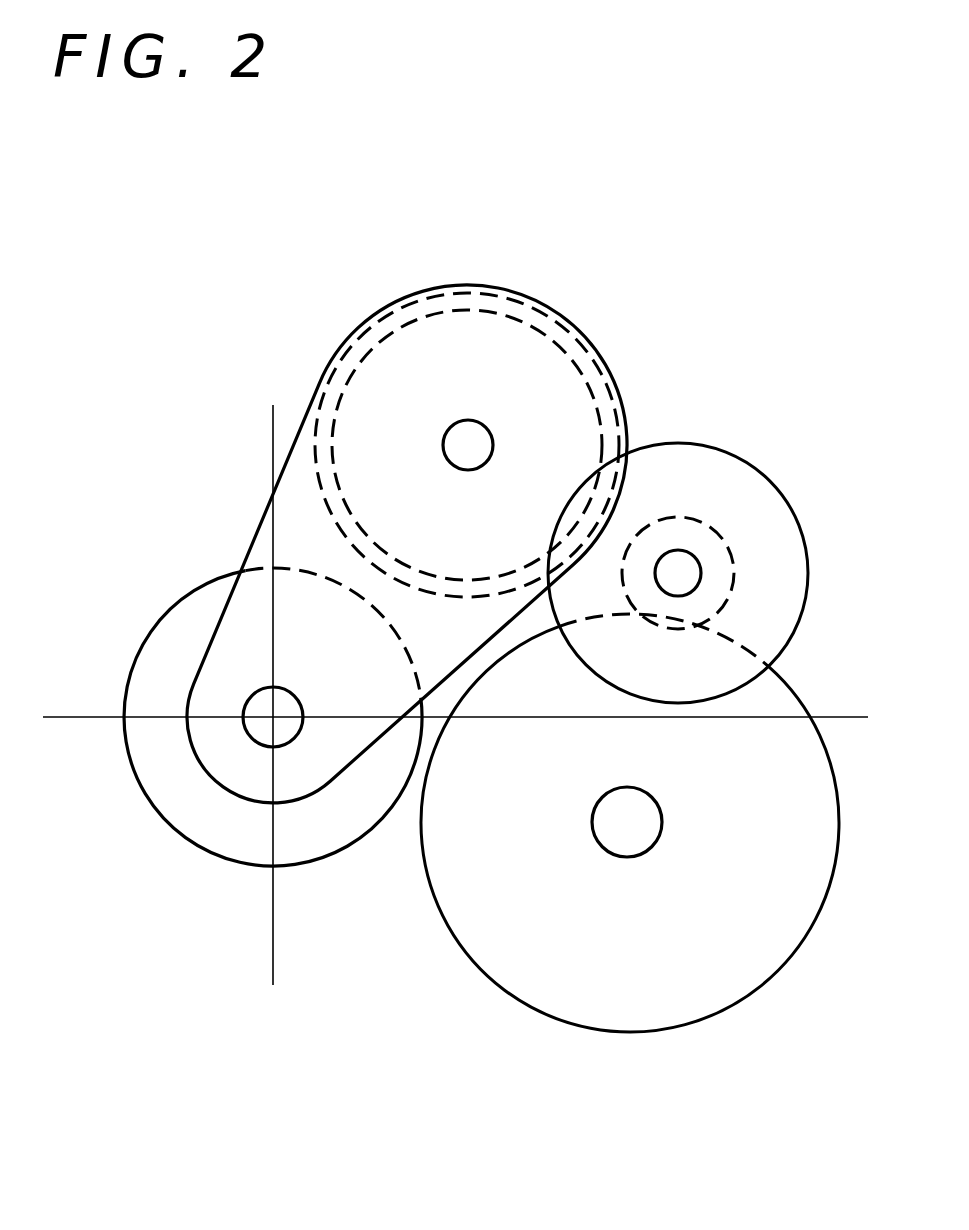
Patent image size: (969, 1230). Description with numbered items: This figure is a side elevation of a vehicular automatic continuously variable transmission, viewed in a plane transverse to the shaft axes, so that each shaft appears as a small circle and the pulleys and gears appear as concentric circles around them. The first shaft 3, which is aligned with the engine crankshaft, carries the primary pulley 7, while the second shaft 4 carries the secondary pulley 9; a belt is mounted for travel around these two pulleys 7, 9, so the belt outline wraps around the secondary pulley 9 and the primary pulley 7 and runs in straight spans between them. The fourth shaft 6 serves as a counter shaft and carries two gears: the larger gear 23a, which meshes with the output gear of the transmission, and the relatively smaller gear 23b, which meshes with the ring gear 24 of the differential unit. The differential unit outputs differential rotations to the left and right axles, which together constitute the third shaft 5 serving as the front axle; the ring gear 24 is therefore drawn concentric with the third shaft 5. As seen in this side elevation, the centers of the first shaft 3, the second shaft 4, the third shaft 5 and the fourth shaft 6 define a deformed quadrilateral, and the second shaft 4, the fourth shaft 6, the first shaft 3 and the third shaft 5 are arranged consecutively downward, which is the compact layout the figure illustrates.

The first shaft 3 is at (252, 739).
The second shaft 4 is at (470, 421).
The third shaft 5 is at (623, 857).
The fourth shaft 6 is at (674, 551).
The primary pulley 7 is at (113, 632).
The secondary pulley 9 is at (584, 322).
The larger gear 23a is at (742, 458).
The smaller gear 23b is at (728, 547).
The ring gear 24 is at (797, 690).